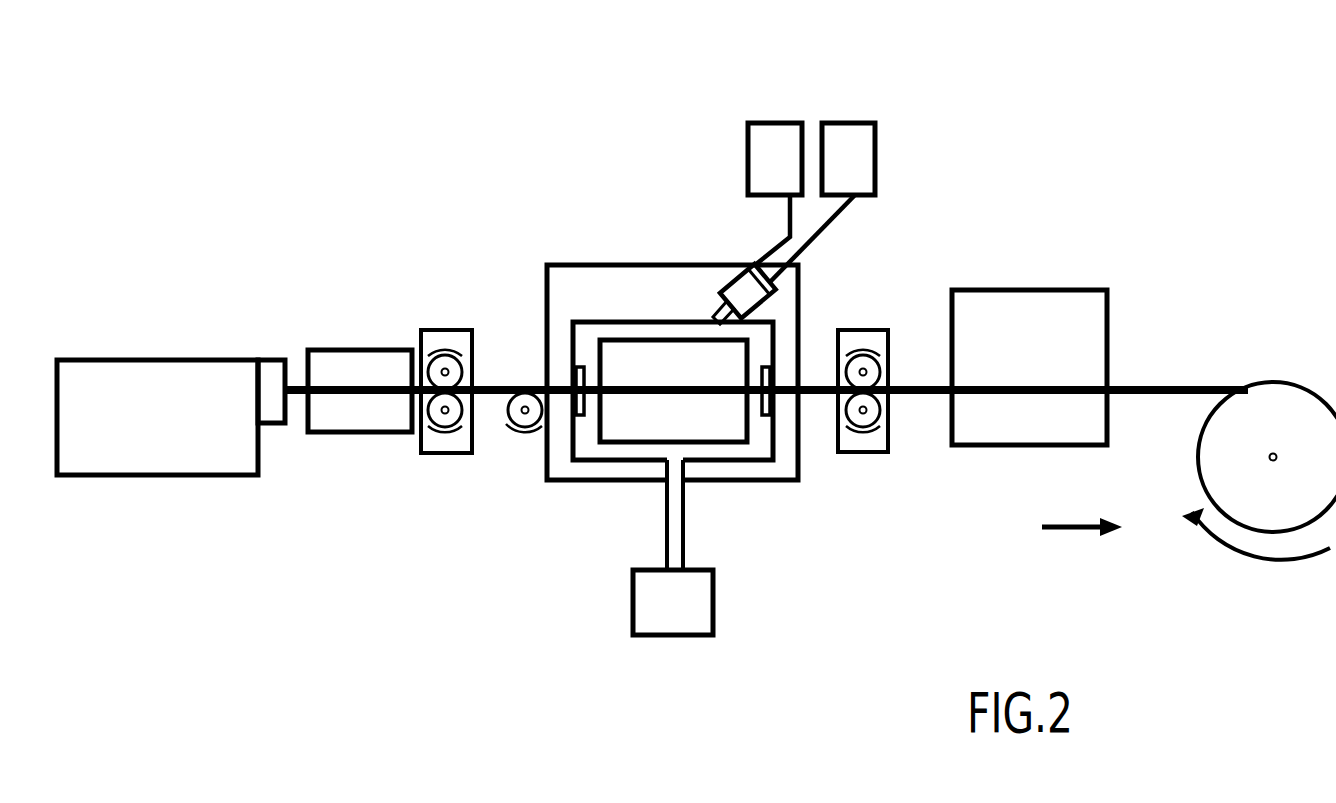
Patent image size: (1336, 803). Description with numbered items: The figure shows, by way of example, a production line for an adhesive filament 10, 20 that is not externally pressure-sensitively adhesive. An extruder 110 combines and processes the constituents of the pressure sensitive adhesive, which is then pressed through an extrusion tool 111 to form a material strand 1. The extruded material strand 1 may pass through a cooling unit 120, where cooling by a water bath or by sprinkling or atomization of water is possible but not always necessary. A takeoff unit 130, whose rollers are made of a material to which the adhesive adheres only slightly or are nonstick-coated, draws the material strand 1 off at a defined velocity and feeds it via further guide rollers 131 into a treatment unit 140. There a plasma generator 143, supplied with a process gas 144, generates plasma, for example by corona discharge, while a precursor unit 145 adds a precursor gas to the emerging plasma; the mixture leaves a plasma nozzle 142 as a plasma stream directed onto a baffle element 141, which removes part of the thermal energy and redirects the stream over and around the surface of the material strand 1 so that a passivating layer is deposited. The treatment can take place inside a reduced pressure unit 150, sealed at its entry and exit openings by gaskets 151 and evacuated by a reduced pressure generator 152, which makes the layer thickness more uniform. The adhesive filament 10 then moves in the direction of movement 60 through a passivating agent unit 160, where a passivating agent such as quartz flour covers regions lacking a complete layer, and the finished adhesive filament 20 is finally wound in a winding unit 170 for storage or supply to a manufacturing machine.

The material strand 1 is at (482, 386).
The adhesive filament 10 is at (810, 397).
The adhesive filament 20 is at (1157, 387).
The direction of movement 60 is at (1082, 547).
The extruder 110 is at (120, 360).
The extrusion tool 111 is at (263, 358).
The cooling unit 120 is at (355, 350).
The takeoff unit 130 is at (438, 452).
The guide roller 131 is at (522, 433).
The treatment unit 140 is at (547, 265).
The baffle element 141 is at (608, 340).
The plasma nozzle 142 is at (717, 318).
The plasma generator 143 is at (814, 267).
The process gas 144 is at (777, 123).
The precursor unit 145 is at (848, 123).
The reduced pressure unit 150 is at (663, 322).
The gasket 151 is at (575, 368).
The reduced pressure generator 152 is at (640, 568).
The passivating agent unit 160 is at (990, 290).
The winding unit 170 is at (1263, 382).